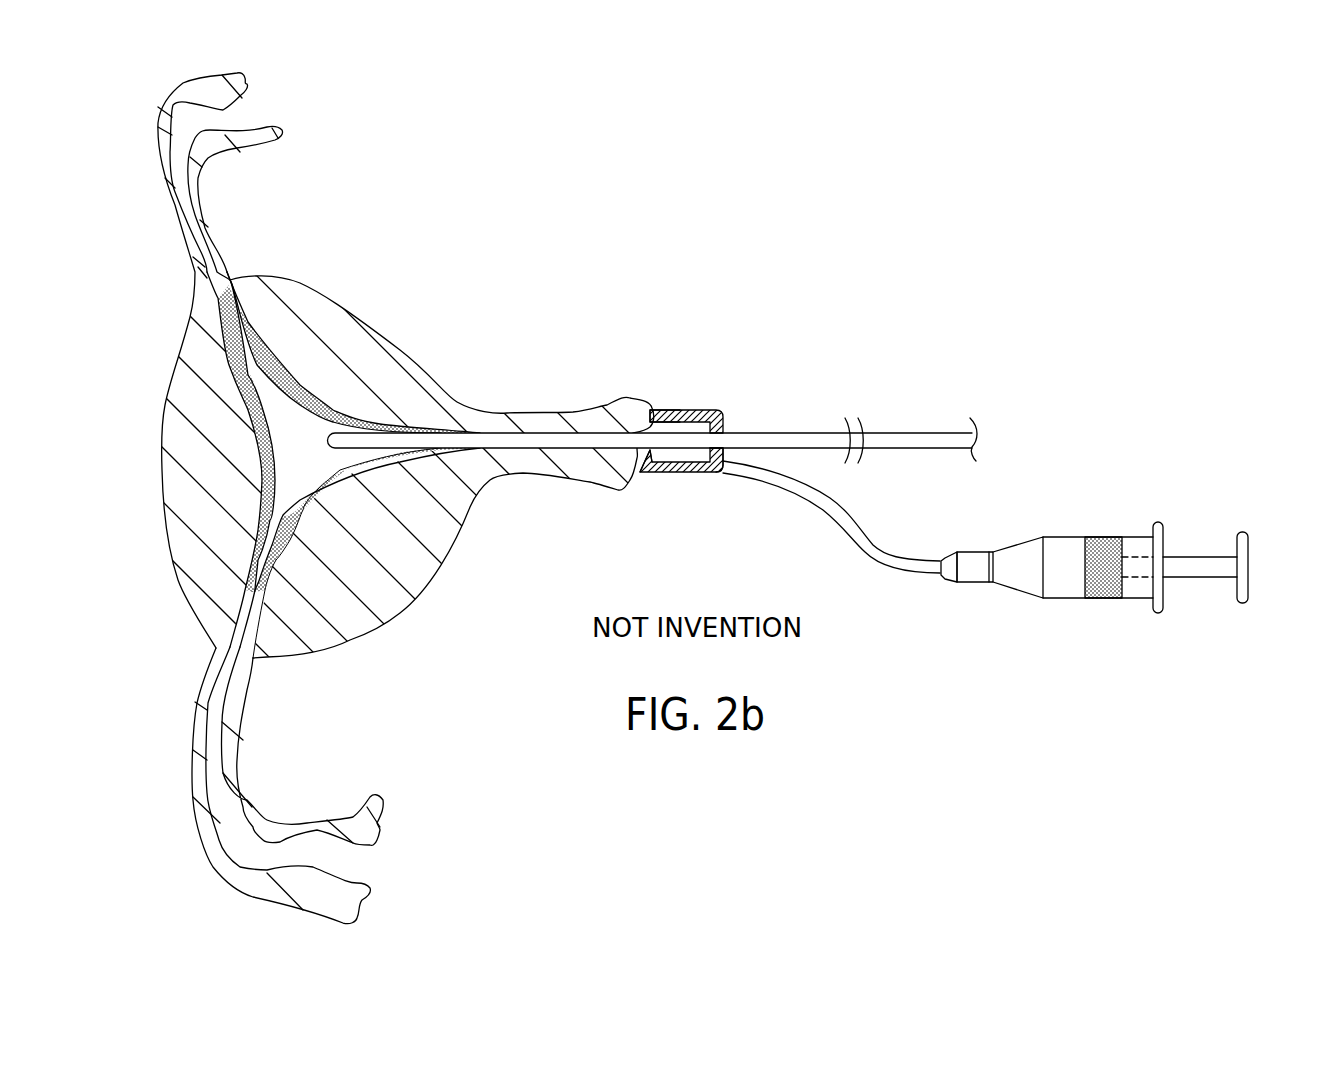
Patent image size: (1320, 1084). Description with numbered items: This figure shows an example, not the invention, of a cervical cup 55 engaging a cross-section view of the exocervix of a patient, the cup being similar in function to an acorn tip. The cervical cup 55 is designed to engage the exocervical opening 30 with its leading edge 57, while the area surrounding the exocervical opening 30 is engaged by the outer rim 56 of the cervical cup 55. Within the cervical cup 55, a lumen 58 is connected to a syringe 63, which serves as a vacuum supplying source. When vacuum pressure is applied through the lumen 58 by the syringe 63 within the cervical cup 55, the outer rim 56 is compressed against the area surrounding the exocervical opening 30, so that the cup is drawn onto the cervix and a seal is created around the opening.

The exocervical opening 30 is at (663, 450).
The cervical cup 55 is at (686, 409).
The outer rim 56 is at (648, 464).
The leading edge 57 is at (658, 409).
The lumen 58 is at (717, 465).
The syringe 63 is at (1058, 524).